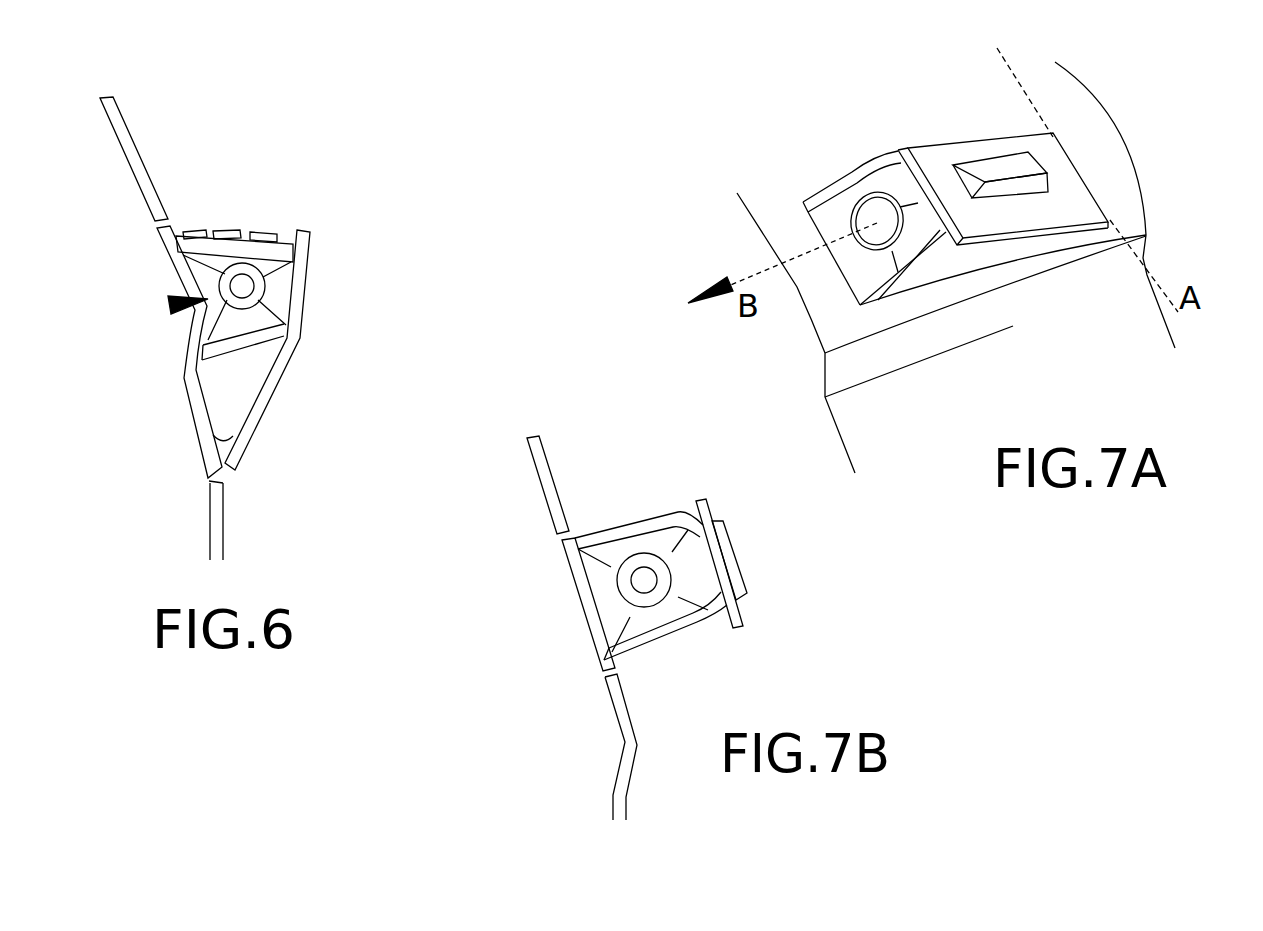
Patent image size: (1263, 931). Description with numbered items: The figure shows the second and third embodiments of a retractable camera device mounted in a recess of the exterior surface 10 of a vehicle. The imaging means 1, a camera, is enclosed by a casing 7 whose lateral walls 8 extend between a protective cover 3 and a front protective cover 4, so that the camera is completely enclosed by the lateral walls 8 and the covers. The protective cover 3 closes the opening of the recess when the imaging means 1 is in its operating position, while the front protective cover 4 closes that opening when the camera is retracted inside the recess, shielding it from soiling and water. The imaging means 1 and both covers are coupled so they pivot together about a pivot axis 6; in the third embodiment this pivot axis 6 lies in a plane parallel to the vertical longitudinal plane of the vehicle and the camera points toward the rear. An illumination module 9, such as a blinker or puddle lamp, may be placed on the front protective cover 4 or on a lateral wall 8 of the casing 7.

In FIG. 7B, the imaging means 1 is at (640, 577).
In FIG. 6, the protective cover 3 is at (172, 262).
In FIG. 7B, the protective cover 3 is at (576, 600).
In FIG. 6, the front protective cover 4 is at (312, 253).
In FIG. 7A, the front protective cover 4 is at (922, 150).
In FIG. 7B, the front protective cover 4 is at (733, 578).
In FIG. 7A, the pivot axis 6 is at (1012, 66).
In FIG. 6, the casing 7 is at (168, 305).
In FIG. 7A, the casing 7 is at (860, 275).
In FIG. 6, the lateral walls 8 is at (214, 238).
In FIG. 7A, the lateral walls 8 is at (842, 178).
In FIG. 6, the illumination module 9 is at (268, 232).
In FIG. 7A, the illumination module 9 is at (1000, 165).
In FIG. 7B, the illumination module 9 is at (728, 536).
In FIG. 7B, the exterior surface 10 is at (547, 492).